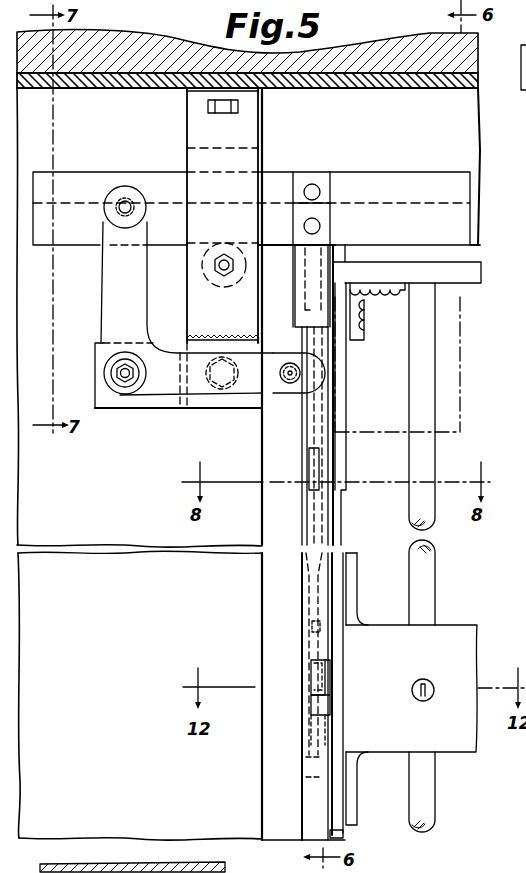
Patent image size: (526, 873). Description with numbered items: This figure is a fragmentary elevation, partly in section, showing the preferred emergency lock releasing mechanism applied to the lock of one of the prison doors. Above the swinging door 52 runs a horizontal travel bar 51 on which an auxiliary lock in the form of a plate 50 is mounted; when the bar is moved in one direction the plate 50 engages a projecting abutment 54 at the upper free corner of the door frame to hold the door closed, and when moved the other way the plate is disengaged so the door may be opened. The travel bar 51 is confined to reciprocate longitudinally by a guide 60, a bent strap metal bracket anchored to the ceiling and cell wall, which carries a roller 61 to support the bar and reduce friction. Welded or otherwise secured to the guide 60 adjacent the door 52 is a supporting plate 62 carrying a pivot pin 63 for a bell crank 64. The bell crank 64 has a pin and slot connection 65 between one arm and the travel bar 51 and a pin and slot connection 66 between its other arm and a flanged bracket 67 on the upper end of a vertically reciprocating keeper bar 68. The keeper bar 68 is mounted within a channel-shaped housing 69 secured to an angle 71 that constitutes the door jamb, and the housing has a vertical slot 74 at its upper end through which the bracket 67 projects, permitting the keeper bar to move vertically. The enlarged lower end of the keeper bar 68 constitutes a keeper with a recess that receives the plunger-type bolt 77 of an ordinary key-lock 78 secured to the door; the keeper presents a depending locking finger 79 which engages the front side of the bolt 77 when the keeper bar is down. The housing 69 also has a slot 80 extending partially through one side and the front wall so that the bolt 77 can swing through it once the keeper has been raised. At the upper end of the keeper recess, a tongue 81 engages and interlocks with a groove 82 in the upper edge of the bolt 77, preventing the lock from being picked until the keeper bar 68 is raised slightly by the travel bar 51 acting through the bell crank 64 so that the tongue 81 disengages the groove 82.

The plate 50 is at (322, 233).
The travel bar 51 is at (410, 185).
The swinging door 52 is at (472, 283).
The projecting abutment 54 is at (368, 288).
The guide 60 is at (253, 129).
The roller 61 is at (222, 283).
The supporting plate 62 is at (166, 408).
The pivot pin 63 is at (124, 385).
The bell crank 64 is at (113, 310).
The pin and slot connection 65 is at (128, 198).
The pin and slot connection 66 is at (289, 384).
The flanged bracket 67 is at (315, 360).
The keeper bar 68 is at (313, 468).
The channel-shaped housing 69 is at (313, 806).
The angle 71 is at (342, 834).
The vertical slot 74 is at (320, 415).
The plunger-type bolt 77 is at (325, 702).
The key-lock 78 is at (432, 645).
The locking finger 79 is at (317, 677).
The slot 80 is at (318, 718).
The tongue 81 is at (311, 629).
The groove 82 is at (311, 668).